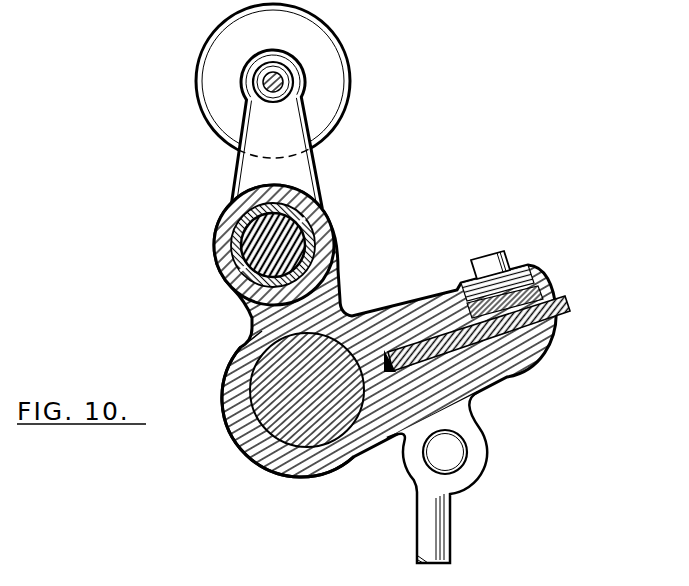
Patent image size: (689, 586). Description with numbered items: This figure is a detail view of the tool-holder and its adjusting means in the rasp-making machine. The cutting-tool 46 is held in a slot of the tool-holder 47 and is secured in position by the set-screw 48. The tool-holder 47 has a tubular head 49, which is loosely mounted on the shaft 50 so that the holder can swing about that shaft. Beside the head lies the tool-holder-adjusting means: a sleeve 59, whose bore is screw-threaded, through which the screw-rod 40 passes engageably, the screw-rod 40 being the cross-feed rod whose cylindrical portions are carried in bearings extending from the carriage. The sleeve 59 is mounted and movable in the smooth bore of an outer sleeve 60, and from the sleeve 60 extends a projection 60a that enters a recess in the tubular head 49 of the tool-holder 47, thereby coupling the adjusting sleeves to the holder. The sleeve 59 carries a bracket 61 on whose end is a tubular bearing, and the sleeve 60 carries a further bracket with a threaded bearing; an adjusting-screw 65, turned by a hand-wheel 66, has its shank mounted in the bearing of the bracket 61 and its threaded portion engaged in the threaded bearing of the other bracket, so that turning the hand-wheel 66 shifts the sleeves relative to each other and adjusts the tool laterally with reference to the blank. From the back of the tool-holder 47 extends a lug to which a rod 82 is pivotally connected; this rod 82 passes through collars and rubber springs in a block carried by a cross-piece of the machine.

The hand-wheel 66 is at (198, 73).
The adjusting-screw 65 is at (280, 83).
The bracket 61 is at (302, 177).
The sleeve 60 is at (230, 212).
The projection 60a is at (240, 335).
The screw-rod 40 is at (216, 240).
The sleeve 59 is at (342, 242).
The tool-holder 47 is at (402, 318).
The set-screw 48 is at (512, 256).
The cutting-tool 46 is at (563, 315).
The shaft 50 is at (240, 440).
The tubular head 49 is at (297, 462).
The rod 82 is at (437, 532).